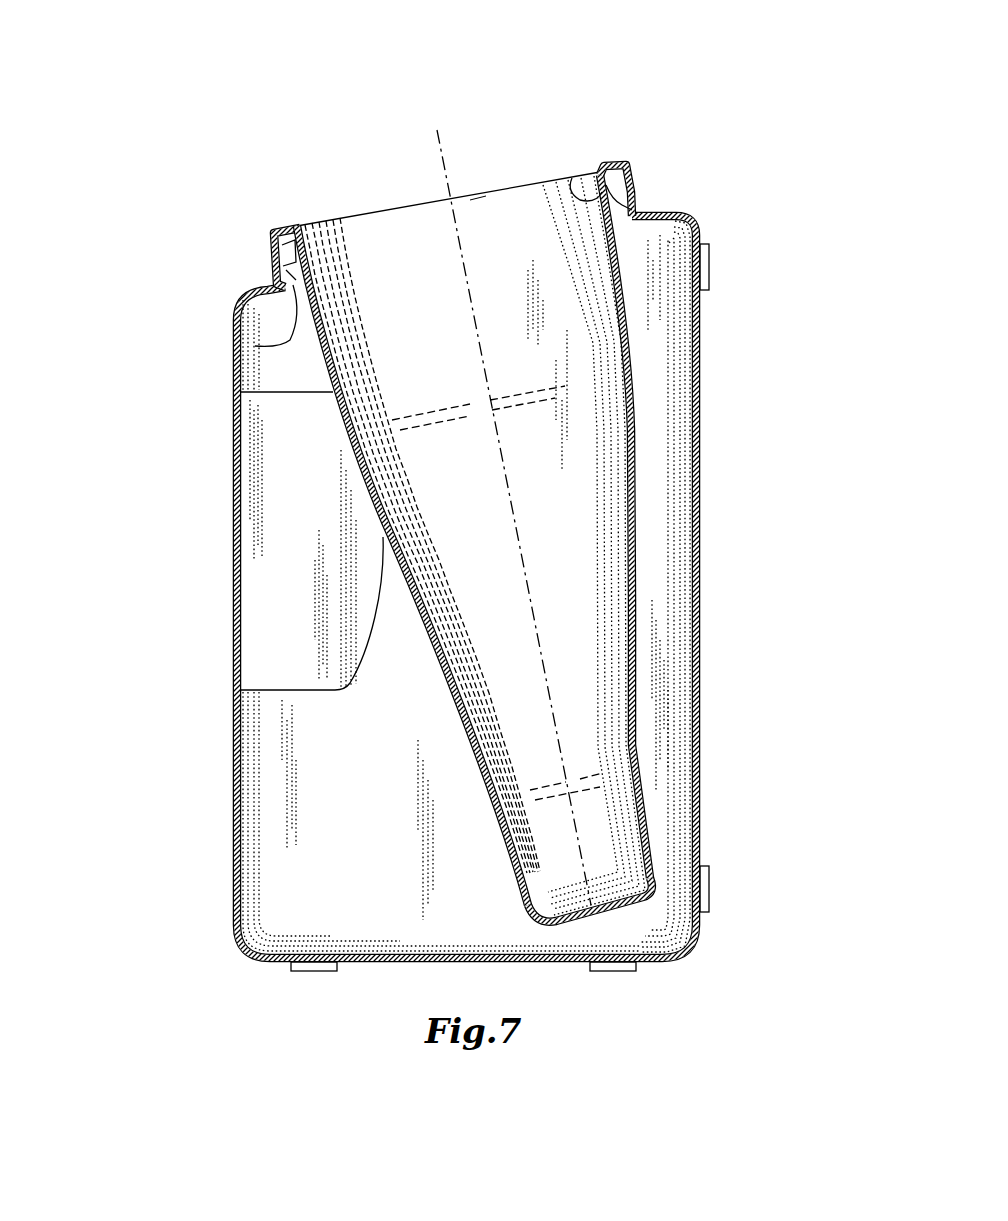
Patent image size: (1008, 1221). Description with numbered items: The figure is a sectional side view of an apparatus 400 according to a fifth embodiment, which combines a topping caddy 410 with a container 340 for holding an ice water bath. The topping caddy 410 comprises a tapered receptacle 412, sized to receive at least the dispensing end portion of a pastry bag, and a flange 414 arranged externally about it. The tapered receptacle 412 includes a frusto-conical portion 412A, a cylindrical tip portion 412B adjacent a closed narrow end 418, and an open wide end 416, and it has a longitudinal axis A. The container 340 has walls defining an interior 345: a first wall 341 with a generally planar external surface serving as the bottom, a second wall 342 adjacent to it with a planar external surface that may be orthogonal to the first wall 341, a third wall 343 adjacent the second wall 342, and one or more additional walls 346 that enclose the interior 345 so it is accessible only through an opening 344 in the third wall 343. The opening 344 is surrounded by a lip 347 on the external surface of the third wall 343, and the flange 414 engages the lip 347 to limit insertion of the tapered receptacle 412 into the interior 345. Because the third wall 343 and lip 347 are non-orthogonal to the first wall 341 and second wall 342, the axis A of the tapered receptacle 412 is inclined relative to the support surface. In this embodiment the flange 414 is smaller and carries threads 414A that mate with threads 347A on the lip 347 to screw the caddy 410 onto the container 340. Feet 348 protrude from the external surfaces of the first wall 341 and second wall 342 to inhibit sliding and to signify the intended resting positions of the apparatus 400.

The apparatus 400 is at (220, 104).
The container 340 is at (220, 742).
The first wall 341 is at (530, 963).
The second wall 342 is at (698, 660).
The third wall 343 is at (652, 212).
The opening 344 is at (255, 346).
The interior 345 is at (378, 846).
The additional walls 346 is at (233, 803).
The lip 347 is at (586, 176).
The mating threads 347A is at (278, 262).
The feet 348 is at (709, 268).
The topping caddy 410 is at (647, 503).
The tapered receptacle 412 is at (478, 478).
The frusto-conical portion 412A is at (632, 565).
The cylindrical tip portion 412B is at (647, 828).
The flange 414 is at (613, 160).
The threads 414A is at (295, 228).
The open wide end 416 is at (479, 186).
The closed narrow end 418 is at (668, 952).
The longitudinal axis A is at (440, 232).